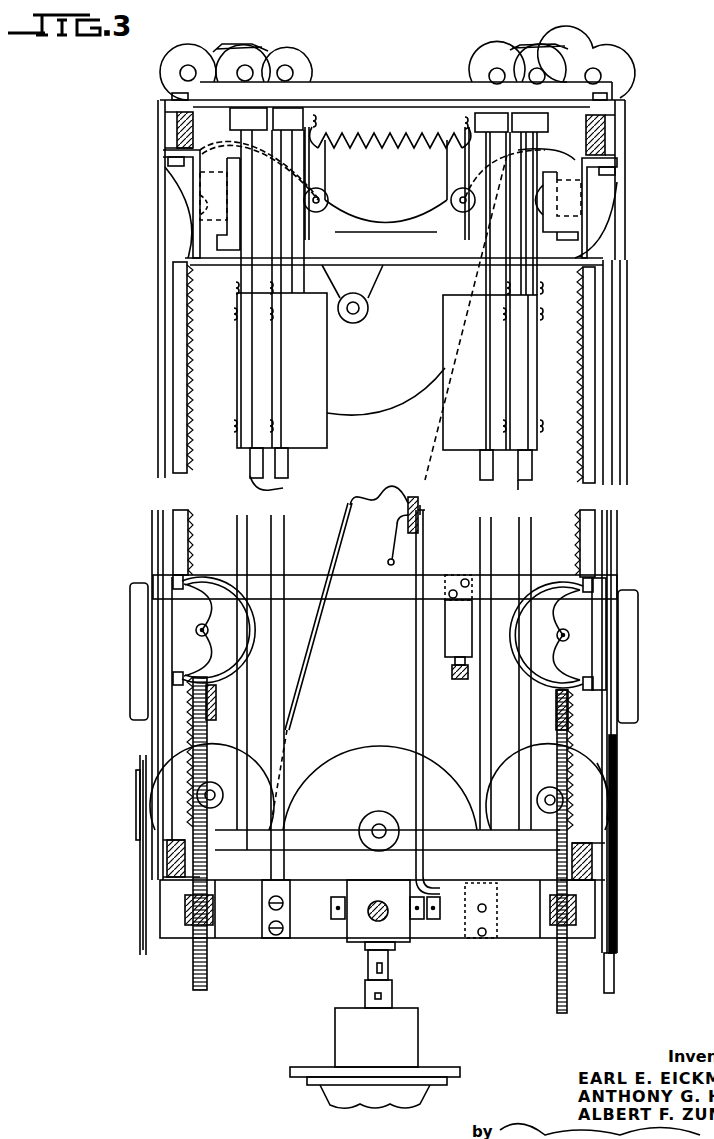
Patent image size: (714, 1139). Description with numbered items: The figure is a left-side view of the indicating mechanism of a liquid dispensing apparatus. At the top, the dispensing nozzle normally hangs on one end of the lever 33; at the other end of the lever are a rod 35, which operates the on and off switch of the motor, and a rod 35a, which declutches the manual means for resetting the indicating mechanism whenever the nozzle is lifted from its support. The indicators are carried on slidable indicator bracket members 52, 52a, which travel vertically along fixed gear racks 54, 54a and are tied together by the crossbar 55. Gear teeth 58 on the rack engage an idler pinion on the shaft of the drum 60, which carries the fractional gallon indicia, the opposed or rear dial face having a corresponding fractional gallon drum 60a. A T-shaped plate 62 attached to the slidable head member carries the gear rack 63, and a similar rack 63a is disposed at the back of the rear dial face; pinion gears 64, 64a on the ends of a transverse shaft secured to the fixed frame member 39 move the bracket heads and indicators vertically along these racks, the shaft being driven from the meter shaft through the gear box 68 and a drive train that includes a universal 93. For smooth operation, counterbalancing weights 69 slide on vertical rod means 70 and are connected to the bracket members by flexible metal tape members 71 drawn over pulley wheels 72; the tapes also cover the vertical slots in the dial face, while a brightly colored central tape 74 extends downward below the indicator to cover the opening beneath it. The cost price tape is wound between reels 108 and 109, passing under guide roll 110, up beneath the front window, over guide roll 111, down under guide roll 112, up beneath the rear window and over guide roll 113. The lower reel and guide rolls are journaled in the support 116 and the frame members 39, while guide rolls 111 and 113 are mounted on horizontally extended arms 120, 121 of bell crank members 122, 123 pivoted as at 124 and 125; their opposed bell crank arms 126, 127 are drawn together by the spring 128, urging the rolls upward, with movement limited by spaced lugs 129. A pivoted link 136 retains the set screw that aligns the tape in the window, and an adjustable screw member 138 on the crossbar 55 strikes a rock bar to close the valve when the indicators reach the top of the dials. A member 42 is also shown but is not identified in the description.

The lever 33 is at (406, 505).
The rod 35 is at (392, 540).
The rod 35a is at (416, 665).
The fixed frame member 39 is at (172, 135).
The actuating rod 42 is at (345, 528).
The indicator bracket member 52 is at (580, 640).
The indicator bracket member 52a is at (184, 636).
The fixed gear rack 54 is at (580, 545).
The fixed gear rack 54a is at (182, 550).
The crossbar 55 is at (388, 599).
The gear teeth 58 is at (580, 560).
The drum 60 is at (520, 648).
The fractional gallon drum 60a is at (240, 650).
The T-shaped plate 62 is at (552, 716).
The gear rack 63 is at (550, 787).
The gear rack 63a is at (208, 782).
The pinion gear 64 is at (552, 938).
The pinion gear 64a is at (210, 938).
The gear box 68 is at (345, 1035).
The counterbalancing weights 69 is at (292, 388).
The rod means 70 is at (283, 488).
The flexible metal tape members 71 is at (310, 244).
The pulley wheels 72 is at (254, 47).
The central tape 74 is at (614, 968).
The universal 93 is at (392, 976).
The reel 108 is at (375, 735).
The reel 109 is at (375, 418).
The guide roll 110 is at (612, 810).
The guide roll 111 is at (605, 222).
The guide roll 112 is at (150, 806).
The guide roll 113 is at (172, 212).
The support 116 is at (325, 845).
The horizontally extended arm 120 is at (548, 195).
The horizontally extended arm 121 is at (234, 195).
The bell crank member 122 is at (322, 178).
The bell crank member 123 is at (452, 168).
The pivot 124 is at (456, 200).
The pivot 125 is at (320, 197).
The bell crank arm 126 is at (464, 140).
The bell crank arm 127 is at (316, 140).
The spring 128 is at (395, 136).
The spaced lugs 129 is at (202, 195).
The link 136 is at (618, 770).
The adjustable screw member 138 is at (455, 675).